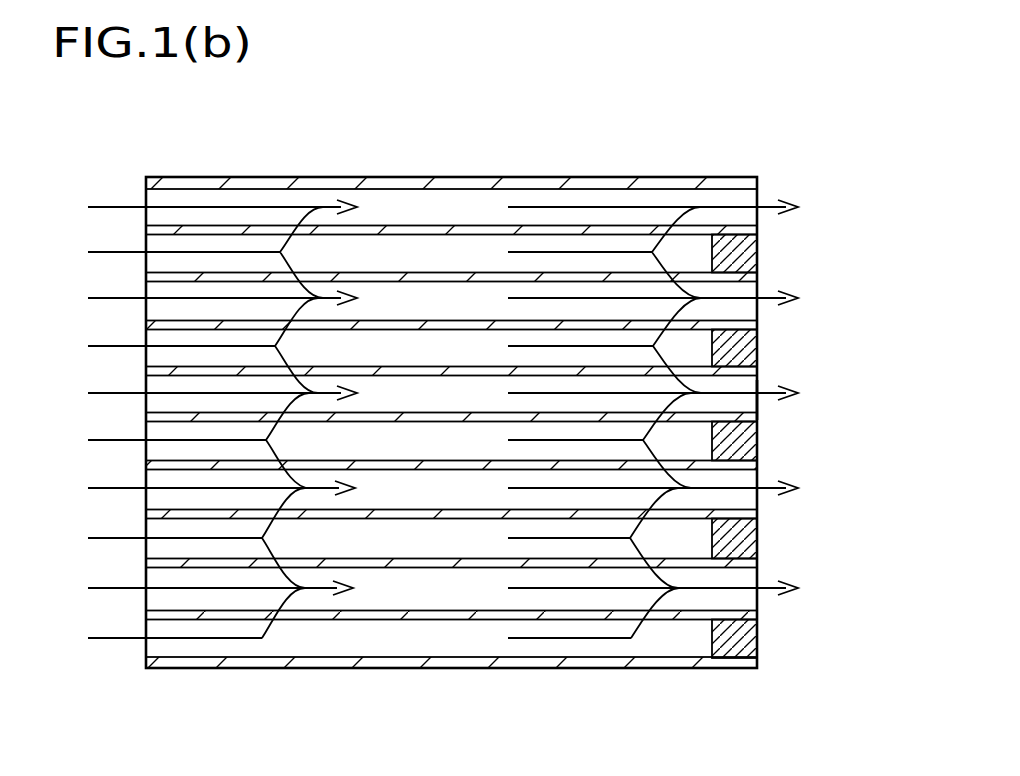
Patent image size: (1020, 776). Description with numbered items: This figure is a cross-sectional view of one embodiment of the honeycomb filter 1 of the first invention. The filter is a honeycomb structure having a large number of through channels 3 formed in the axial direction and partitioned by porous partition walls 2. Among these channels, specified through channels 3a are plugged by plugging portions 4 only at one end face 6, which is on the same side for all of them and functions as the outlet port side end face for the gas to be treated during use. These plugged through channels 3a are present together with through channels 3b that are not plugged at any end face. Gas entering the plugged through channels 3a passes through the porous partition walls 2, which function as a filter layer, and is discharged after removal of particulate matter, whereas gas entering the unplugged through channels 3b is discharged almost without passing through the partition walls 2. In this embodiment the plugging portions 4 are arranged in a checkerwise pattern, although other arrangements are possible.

The honeycomb filter 1 is at (459, 368).
The porous partition walls 2 is at (555, 230).
The through channels 3 is at (443, 353).
The plugged through channels 3a is at (378, 248).
The unplugged through channels 3b is at (368, 123).
The plugging portions 4 is at (758, 249).
The end face 6 is at (758, 402).